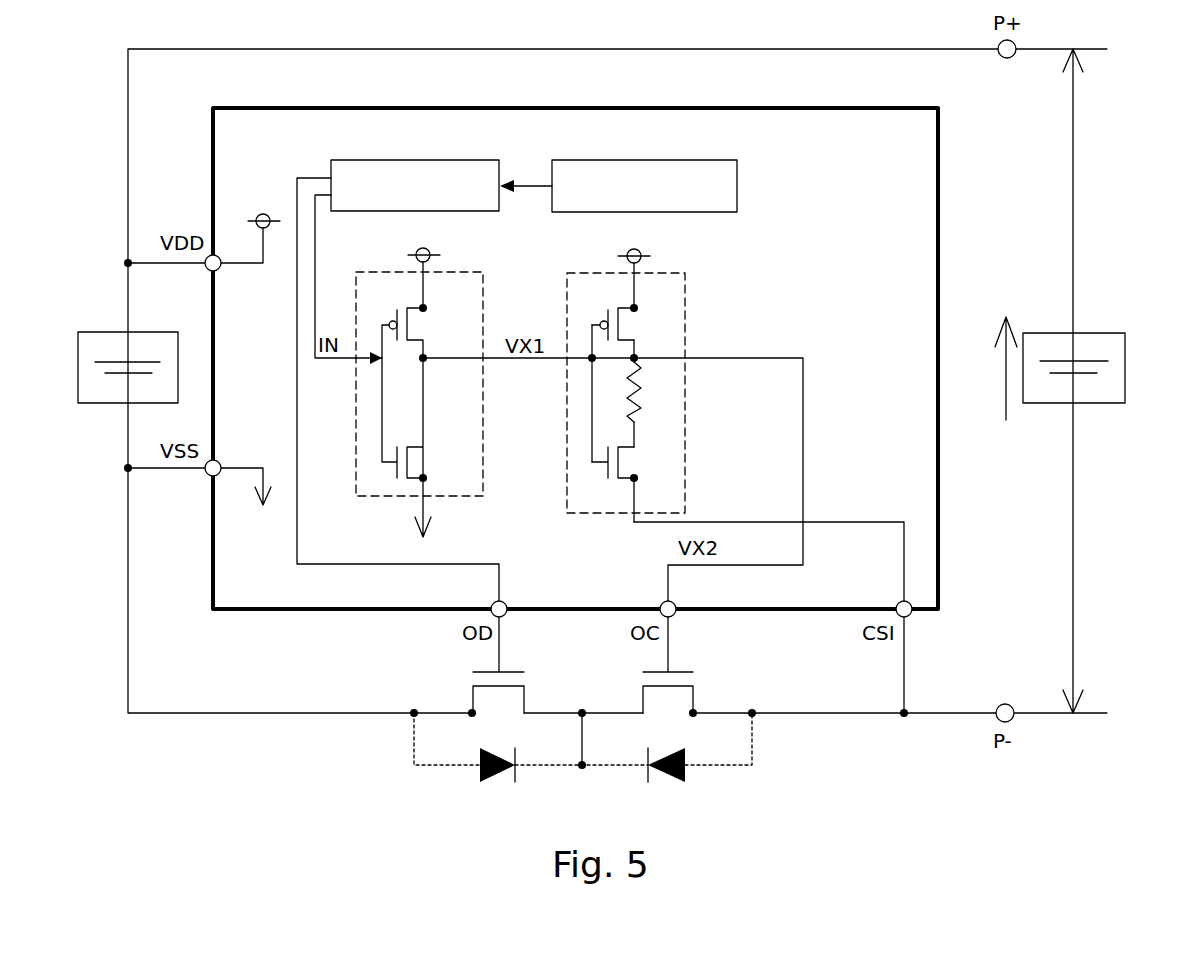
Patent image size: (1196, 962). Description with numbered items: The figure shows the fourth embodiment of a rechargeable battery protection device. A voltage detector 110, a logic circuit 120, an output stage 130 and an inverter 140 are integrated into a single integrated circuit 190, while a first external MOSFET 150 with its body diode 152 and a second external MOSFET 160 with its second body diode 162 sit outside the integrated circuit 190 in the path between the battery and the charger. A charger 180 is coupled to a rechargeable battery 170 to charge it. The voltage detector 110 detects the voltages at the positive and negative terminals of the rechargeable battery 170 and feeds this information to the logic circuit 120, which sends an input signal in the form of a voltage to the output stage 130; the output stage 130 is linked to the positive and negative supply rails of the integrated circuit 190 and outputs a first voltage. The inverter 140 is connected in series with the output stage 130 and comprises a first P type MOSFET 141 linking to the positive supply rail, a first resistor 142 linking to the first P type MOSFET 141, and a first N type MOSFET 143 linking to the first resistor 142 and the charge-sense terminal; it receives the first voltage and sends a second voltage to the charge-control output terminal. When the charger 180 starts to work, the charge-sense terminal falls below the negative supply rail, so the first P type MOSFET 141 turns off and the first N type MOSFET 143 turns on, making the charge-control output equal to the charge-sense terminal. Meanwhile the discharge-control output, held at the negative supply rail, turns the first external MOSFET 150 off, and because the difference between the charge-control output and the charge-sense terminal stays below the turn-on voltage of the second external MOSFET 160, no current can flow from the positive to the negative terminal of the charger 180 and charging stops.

The voltage detector 110 is at (683, 160).
The logic circuit 120 is at (452, 160).
The output stage 130 is at (390, 272).
The inverter 140 is at (648, 374).
The first P type MOSFET 141 is at (634, 322).
The first resistor 142 is at (642, 393).
The first N type MOSFET 143 is at (634, 468).
The first external MOSFET 150 is at (515, 670).
The body diode 152 is at (475, 782).
The second external MOSFET 160 is at (685, 670).
The second body diode 162 is at (690, 778).
The rechargeable battery 170 is at (145, 332).
The charger 180 is at (1105, 333).
The integrated circuit 190 is at (838, 108).